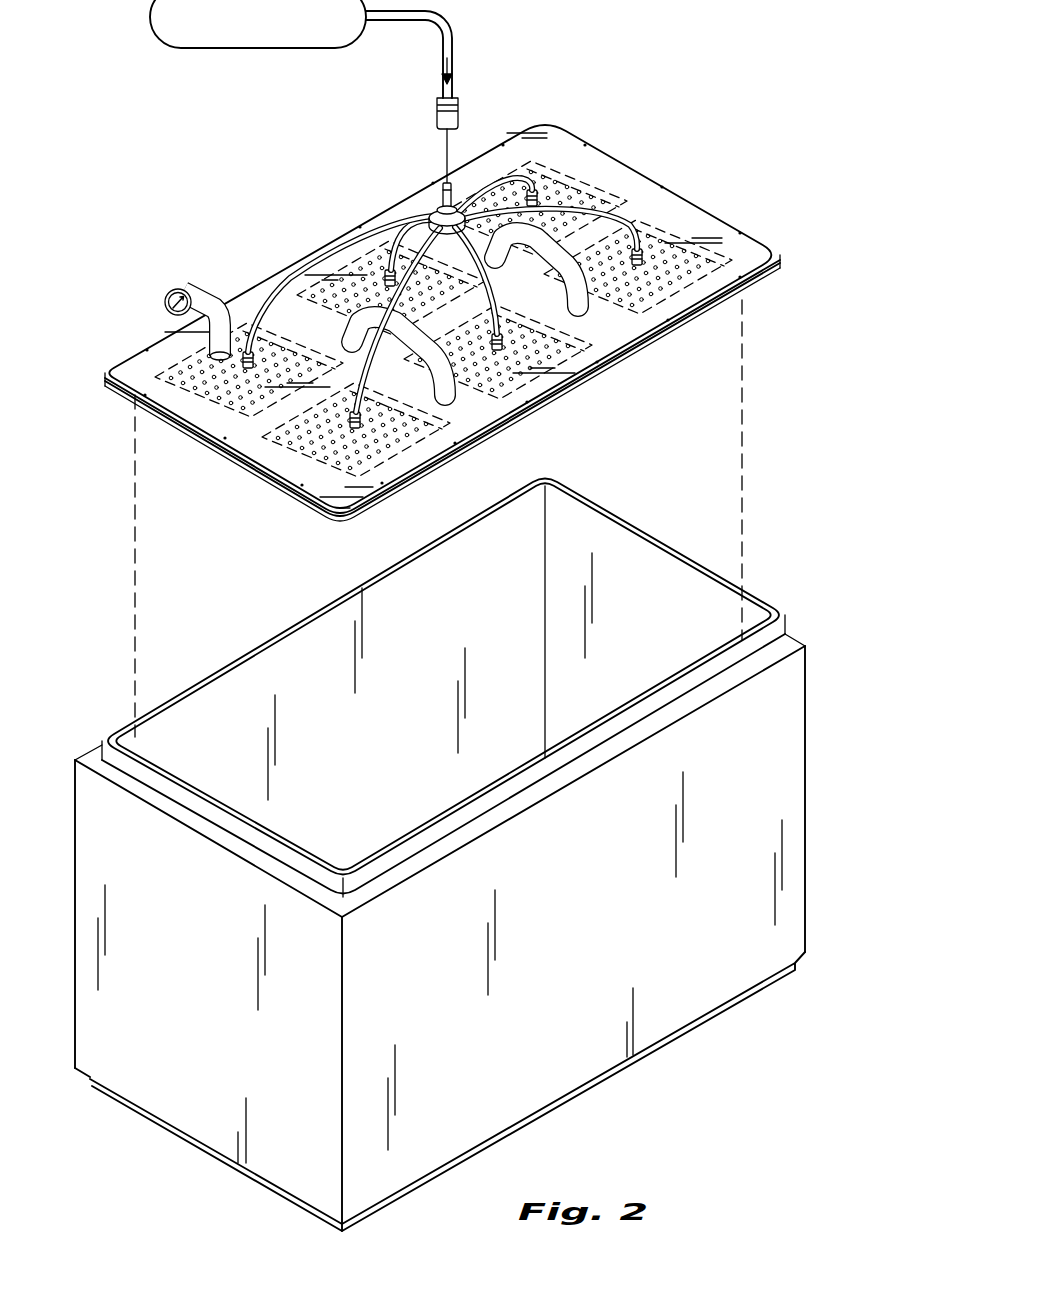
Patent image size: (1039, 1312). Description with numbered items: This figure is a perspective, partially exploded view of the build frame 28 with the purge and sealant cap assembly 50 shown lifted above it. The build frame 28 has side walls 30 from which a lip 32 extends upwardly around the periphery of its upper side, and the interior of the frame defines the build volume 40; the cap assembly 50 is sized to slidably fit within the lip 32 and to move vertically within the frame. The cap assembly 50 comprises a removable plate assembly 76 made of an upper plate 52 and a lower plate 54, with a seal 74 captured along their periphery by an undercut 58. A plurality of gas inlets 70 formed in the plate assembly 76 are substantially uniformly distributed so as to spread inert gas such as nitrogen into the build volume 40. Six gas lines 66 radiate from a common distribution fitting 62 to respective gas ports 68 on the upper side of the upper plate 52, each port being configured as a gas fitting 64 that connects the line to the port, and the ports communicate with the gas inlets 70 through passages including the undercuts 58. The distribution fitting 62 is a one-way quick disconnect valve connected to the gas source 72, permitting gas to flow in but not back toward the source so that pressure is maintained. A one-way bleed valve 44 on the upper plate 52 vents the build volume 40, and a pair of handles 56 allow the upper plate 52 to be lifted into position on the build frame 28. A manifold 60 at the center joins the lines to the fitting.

The build frame 28 is at (442, 855).
The side walls 30 is at (185, 980).
The lip 32 is at (774, 650).
The build volume 40 is at (178, 765).
The valve 44 is at (173, 287).
The cap assembly 50 is at (466, 270).
The upper plate 52 is at (763, 252).
The lower plate 54 is at (775, 280).
The handles 56 is at (626, 342).
The undercuts 58 is at (575, 170).
The manifold 60 is at (430, 213).
The distribution fitting 62 is at (440, 195).
The gas fittings 64 is at (470, 360).
The gas lines 66 is at (460, 44).
The gas ports 68 is at (442, 309).
The gas inlets 70 is at (297, 300).
The gas source 72 is at (316, 47).
The seal 74 is at (786, 262).
The plate assembly 76 is at (575, 127).